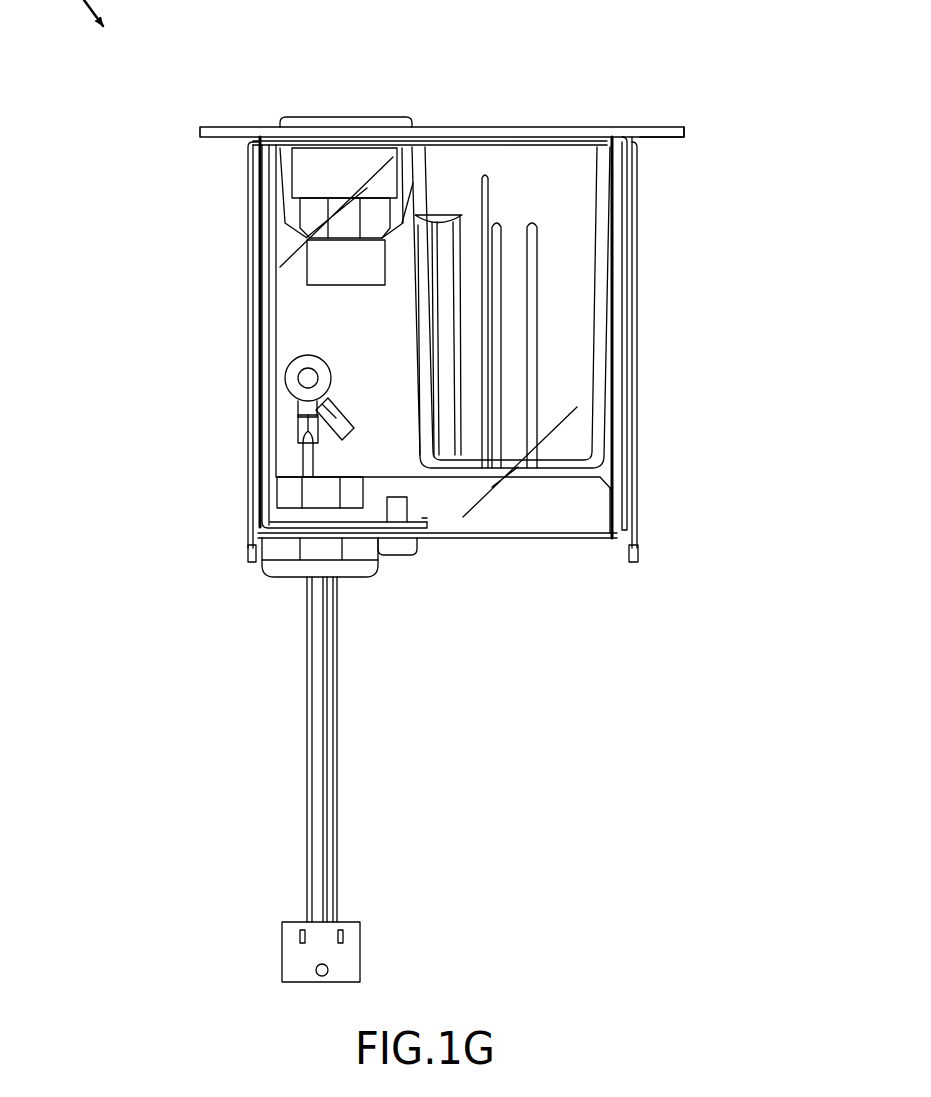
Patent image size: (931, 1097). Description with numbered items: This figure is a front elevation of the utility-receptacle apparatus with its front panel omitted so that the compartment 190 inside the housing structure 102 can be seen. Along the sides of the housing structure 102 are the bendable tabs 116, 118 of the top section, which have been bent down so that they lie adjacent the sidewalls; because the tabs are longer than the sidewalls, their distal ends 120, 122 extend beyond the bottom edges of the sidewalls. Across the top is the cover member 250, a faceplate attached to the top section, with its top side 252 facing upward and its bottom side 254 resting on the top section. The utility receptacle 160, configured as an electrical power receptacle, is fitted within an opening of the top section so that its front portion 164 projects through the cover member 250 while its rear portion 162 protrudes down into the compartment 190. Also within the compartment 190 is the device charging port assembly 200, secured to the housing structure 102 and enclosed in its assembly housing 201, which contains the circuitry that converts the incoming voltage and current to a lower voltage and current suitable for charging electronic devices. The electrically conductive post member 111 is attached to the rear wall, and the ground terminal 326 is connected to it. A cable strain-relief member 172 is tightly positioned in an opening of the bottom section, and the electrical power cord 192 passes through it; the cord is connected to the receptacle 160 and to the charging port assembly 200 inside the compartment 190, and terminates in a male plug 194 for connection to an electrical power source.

The housing structure 102 is at (637, 163).
The electrically conductive post member 111 is at (308, 378).
The bendable tab 116 is at (638, 333).
The bendable tab 118 is at (248, 222).
The distal end 120 is at (631, 563).
The distal end 122 is at (252, 563).
The utility receptacle 160 is at (347, 110).
The rear portion 162 is at (323, 267).
The front portion 164 is at (320, 117).
The cable strain-relief member 172 is at (380, 585).
The compartment 190 is at (253, 238).
The electrical power cord 192 is at (310, 838).
The male plug 194 is at (282, 952).
The device charging port assembly 200 is at (570, 270).
The assembly housing 201 is at (560, 405).
The cover member 250 is at (652, 127).
The top side 252 is at (484, 127).
The bottom side 254 is at (672, 138).
The ground terminal 326 is at (302, 428).